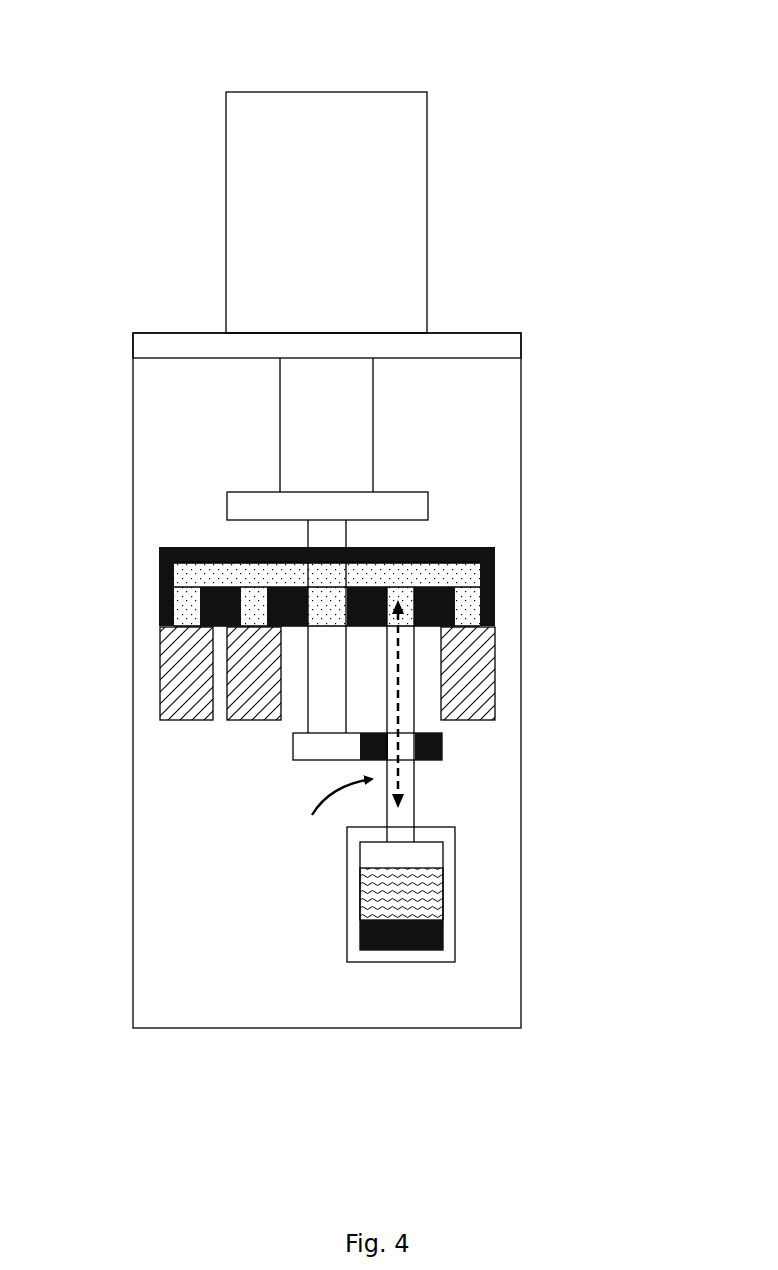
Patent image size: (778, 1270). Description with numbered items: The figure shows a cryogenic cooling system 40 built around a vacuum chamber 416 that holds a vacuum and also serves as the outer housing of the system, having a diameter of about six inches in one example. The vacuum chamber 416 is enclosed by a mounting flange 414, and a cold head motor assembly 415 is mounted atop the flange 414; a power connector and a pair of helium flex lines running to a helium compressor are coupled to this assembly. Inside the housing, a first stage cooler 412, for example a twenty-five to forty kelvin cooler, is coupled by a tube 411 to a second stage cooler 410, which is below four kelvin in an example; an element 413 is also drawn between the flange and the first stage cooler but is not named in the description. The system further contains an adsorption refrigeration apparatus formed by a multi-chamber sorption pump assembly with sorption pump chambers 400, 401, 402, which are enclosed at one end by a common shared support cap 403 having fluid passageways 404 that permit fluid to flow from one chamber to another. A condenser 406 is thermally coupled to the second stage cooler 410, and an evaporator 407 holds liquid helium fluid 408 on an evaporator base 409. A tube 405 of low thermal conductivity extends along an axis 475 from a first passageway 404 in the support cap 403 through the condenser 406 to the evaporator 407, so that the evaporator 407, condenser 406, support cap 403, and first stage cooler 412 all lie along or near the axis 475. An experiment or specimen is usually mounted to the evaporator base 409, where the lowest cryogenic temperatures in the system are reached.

The cryogenic cooling system 40 is at (95, 62).
The sorption pump chamber 400 is at (481, 665).
The sorption pump chamber 401 is at (183, 722).
The sorption pump chamber 402 is at (255, 722).
The common shared support cap 403 is at (455, 547).
The fluid passageways 404 is at (475, 580).
The tube 405 is at (413, 816).
The condenser 406 is at (442, 747).
The evaporator 407 is at (455, 895).
The liquid helium fluid 408 is at (428, 893).
The evaporator base 409 is at (360, 934).
The second stage cooler 410 is at (317, 762).
The tube 411 is at (347, 530).
The first stage cooler 412 is at (232, 492).
The stem 413 is at (373, 412).
The mounting flange 414 is at (467, 333).
The cold head motor assembly 415 is at (427, 268).
The vacuum chamber 416 is at (522, 432).
The axis 475 is at (321, 810).